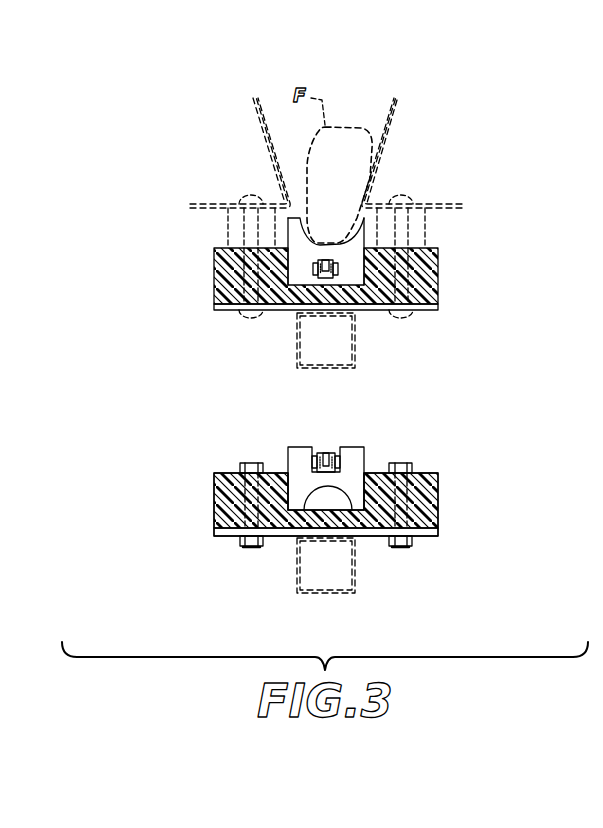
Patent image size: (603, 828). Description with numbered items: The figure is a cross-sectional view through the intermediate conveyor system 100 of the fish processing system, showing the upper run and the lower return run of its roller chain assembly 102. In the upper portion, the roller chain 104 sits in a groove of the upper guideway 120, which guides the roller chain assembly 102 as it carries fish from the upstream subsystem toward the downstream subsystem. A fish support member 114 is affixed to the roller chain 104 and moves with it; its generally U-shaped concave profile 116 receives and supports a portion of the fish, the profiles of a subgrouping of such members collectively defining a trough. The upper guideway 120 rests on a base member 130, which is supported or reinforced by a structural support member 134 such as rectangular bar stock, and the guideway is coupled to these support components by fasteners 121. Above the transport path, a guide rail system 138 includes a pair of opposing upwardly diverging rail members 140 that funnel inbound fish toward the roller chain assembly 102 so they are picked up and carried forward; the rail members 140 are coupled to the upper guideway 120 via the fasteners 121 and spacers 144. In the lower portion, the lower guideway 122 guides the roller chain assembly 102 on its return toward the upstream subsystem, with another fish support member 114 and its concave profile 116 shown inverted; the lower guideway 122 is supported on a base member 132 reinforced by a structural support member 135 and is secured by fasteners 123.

The intermediate conveyor system 100 is at (426, 94).
The roller chain assembly 102 is at (371, 225).
The roller chain 104 is at (323, 270).
The fish support member 114 is at (302, 257).
The concave profile 116 is at (298, 221).
The upper guideway 120 is at (438, 273).
The fastener 121 is at (240, 316).
The lower guideway 122 is at (440, 500).
The fastener 123 is at (240, 542).
The base member 130 is at (438, 307).
The base member 132 is at (438, 530).
The structural support member 134 is at (357, 352).
The structural support member 135 is at (355, 575).
The guide rail system 138 is at (171, 129).
The upwardly diverging rail member 140 is at (261, 126).
The spacer 144 is at (425, 232).